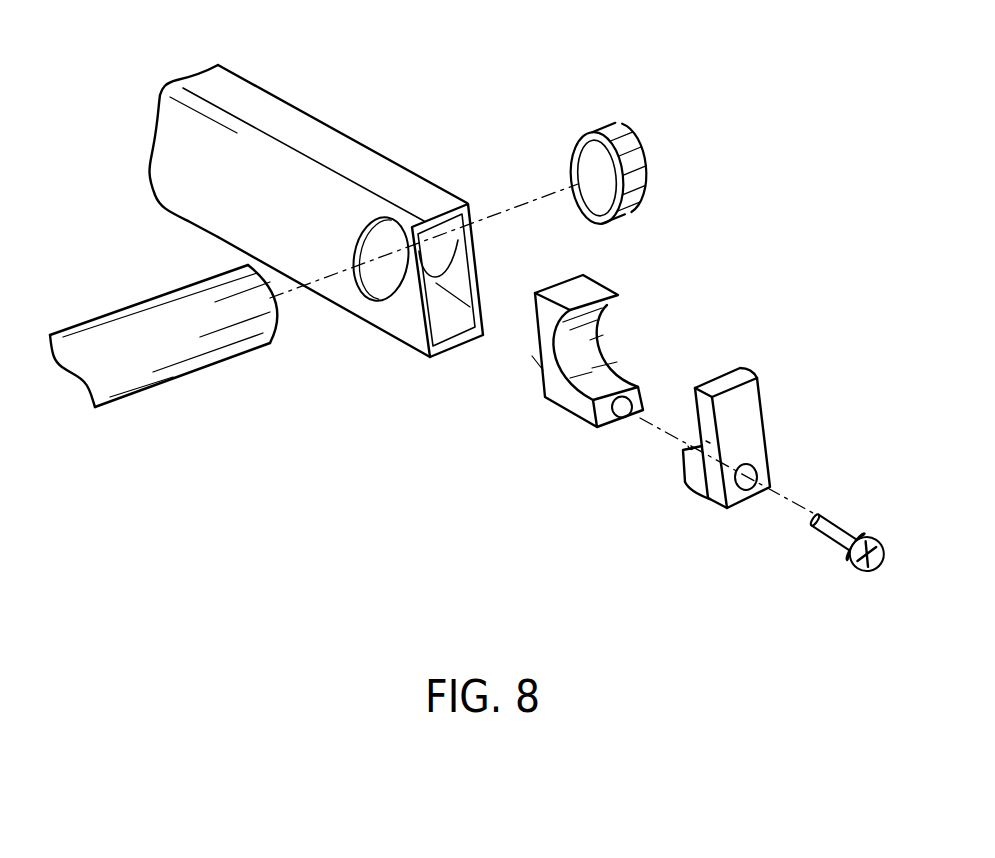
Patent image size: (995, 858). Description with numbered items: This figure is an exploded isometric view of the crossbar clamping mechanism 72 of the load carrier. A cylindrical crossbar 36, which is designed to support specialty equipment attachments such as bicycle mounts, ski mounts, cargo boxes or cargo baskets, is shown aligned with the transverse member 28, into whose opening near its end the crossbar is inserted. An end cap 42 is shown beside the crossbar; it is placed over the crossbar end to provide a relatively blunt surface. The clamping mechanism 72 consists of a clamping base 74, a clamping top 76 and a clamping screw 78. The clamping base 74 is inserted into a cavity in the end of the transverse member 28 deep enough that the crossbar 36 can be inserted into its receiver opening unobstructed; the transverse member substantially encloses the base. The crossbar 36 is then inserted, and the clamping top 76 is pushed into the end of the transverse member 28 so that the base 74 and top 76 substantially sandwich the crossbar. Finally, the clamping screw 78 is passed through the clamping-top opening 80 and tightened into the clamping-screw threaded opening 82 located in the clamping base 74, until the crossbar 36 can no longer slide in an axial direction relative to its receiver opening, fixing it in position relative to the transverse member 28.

The transverse member 28 is at (267, 102).
The crossbar 36 is at (157, 308).
The end cap 42 is at (640, 153).
The clamping mechanism 72 is at (562, 472).
The clamping base 74 is at (553, 393).
The clamping top 76 is at (750, 413).
The clamping screw 78 is at (835, 538).
The clamping-top opening 80 is at (768, 465).
The clamping-screw threaded opening 82 is at (632, 403).